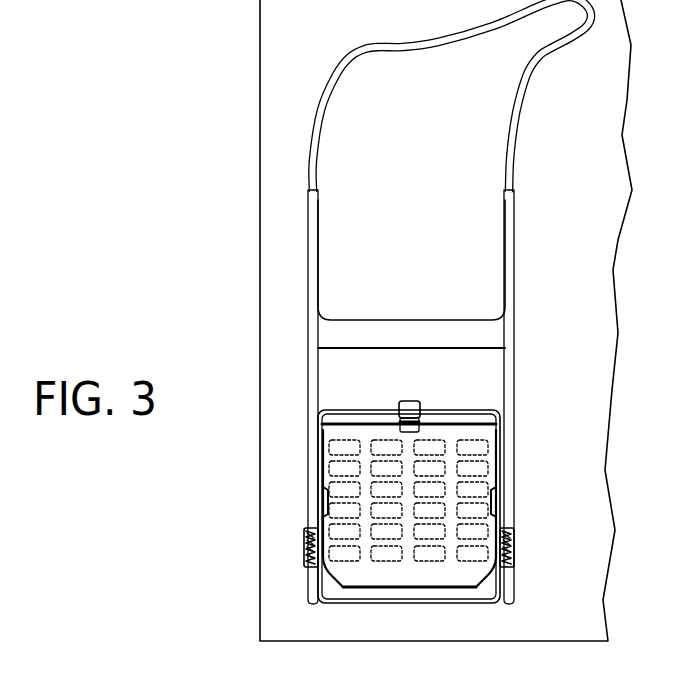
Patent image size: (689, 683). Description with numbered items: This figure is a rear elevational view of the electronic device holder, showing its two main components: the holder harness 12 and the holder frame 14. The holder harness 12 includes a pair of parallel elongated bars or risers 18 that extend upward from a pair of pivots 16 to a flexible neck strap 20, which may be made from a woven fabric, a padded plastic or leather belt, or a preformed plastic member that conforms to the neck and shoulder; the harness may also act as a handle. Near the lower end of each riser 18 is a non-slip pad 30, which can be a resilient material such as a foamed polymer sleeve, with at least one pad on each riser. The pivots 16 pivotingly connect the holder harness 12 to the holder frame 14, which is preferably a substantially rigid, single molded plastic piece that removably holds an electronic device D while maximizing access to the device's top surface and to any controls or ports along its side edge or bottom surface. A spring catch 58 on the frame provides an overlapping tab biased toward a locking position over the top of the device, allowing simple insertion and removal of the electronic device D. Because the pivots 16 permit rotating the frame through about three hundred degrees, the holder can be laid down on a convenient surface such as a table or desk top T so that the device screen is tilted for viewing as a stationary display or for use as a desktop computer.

The holder harness 12 is at (525, 184).
The holder frame 14 is at (497, 418).
The pivot 16 is at (308, 587).
The riser 18 is at (508, 316).
The neck strap 20 is at (340, 70).
The non-slip pad 30 is at (305, 543).
The spring catch 58 is at (422, 407).
The table or desk top T is at (290, 133).
The electronic device D is at (393, 570).